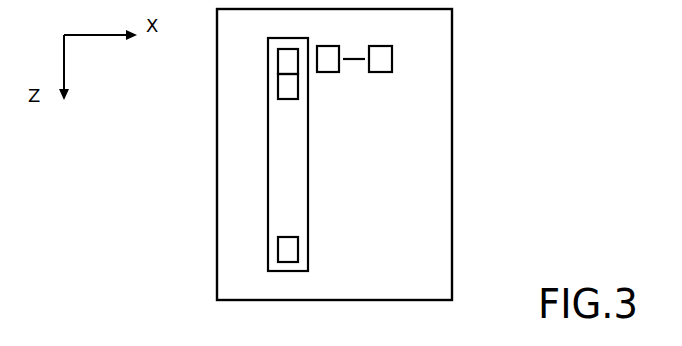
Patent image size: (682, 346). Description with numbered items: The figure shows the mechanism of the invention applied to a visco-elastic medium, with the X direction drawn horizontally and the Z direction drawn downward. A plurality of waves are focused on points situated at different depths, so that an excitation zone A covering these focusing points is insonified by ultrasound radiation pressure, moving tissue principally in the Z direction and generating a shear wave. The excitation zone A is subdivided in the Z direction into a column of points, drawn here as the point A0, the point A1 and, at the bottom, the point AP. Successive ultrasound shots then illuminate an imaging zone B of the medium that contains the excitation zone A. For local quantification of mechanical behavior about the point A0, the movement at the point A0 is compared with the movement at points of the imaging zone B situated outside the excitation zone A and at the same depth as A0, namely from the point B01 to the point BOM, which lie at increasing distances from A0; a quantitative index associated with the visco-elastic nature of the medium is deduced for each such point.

The imaging zone B is at (442, 143).
The excitation zone A is at (290, 165).
The point A0 of the excitation zone A0 is at (277, 54).
The point A1 of the excitation zone A1 is at (277, 90).
The point AP of the excitation zone AP is at (277, 250).
The point B01 of the imaging zone B01 is at (336, 70).
The point B0M of the imaging zone BOM is at (389, 70).